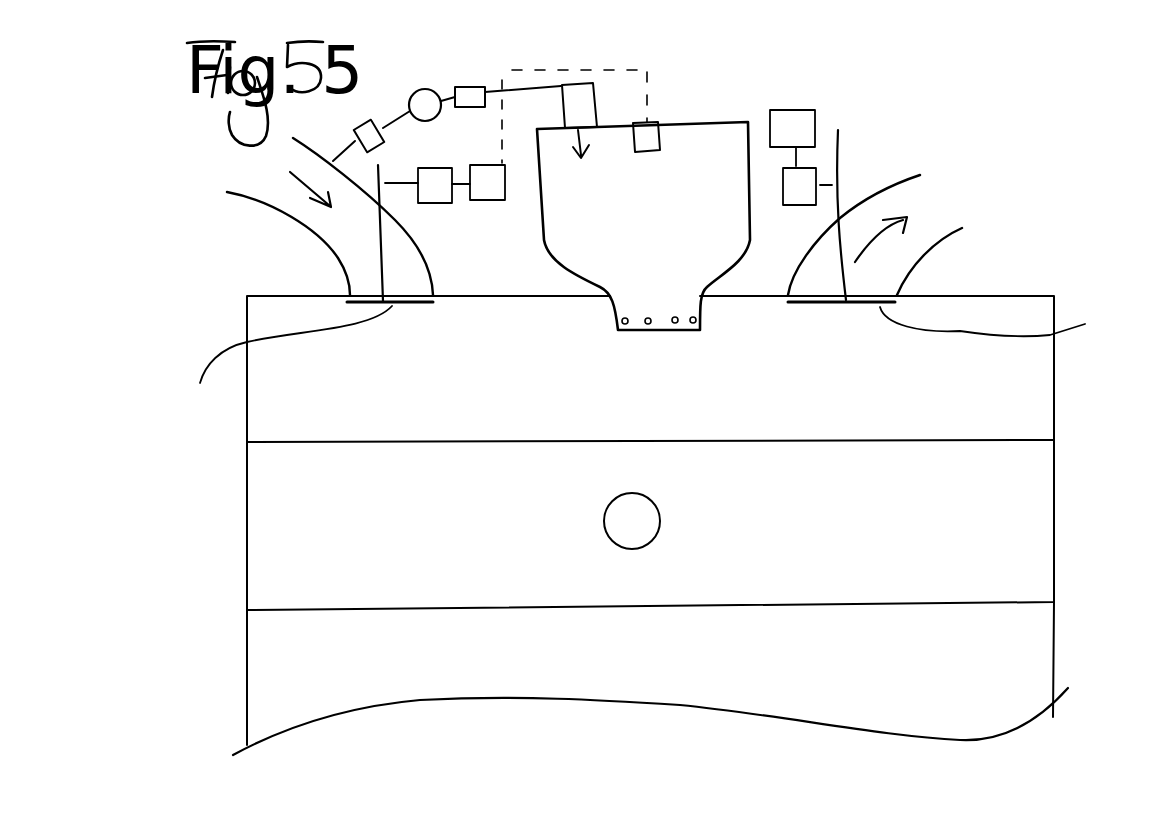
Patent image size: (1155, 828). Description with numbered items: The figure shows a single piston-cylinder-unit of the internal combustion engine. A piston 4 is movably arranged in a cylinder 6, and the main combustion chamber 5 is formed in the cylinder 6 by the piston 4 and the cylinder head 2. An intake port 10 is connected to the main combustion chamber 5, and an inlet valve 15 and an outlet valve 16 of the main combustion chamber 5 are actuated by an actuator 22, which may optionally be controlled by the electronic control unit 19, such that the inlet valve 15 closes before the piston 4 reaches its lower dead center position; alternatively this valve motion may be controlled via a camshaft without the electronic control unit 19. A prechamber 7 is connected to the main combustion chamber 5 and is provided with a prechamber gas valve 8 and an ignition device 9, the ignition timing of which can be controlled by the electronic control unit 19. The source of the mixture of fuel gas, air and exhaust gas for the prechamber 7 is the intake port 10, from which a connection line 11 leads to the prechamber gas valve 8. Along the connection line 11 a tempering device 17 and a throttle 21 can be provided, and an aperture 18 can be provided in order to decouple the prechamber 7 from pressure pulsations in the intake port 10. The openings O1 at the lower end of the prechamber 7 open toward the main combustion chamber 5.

The cylinder head 2 is at (1003, 294).
The piston 4 is at (838, 545).
The main combustion chamber 5 is at (848, 401).
The cylinder 6 is at (247, 663).
The prechamber 7 is at (700, 237).
The prechamber gas valve 8 is at (593, 83).
The ignition device 9 is at (645, 125).
The intake port 10 is at (274, 210).
The connection line 11 is at (538, 80).
The inlet valve 15 is at (293, 374).
The outlet valve 16 is at (966, 329).
The tempering device 17 is at (502, 80).
The aperture 18 is at (370, 117).
The electronic control unit 19 is at (498, 195).
The throttle 21 is at (425, 104).
The actuator 22 is at (445, 198).
The outlet openings O1 is at (692, 323).